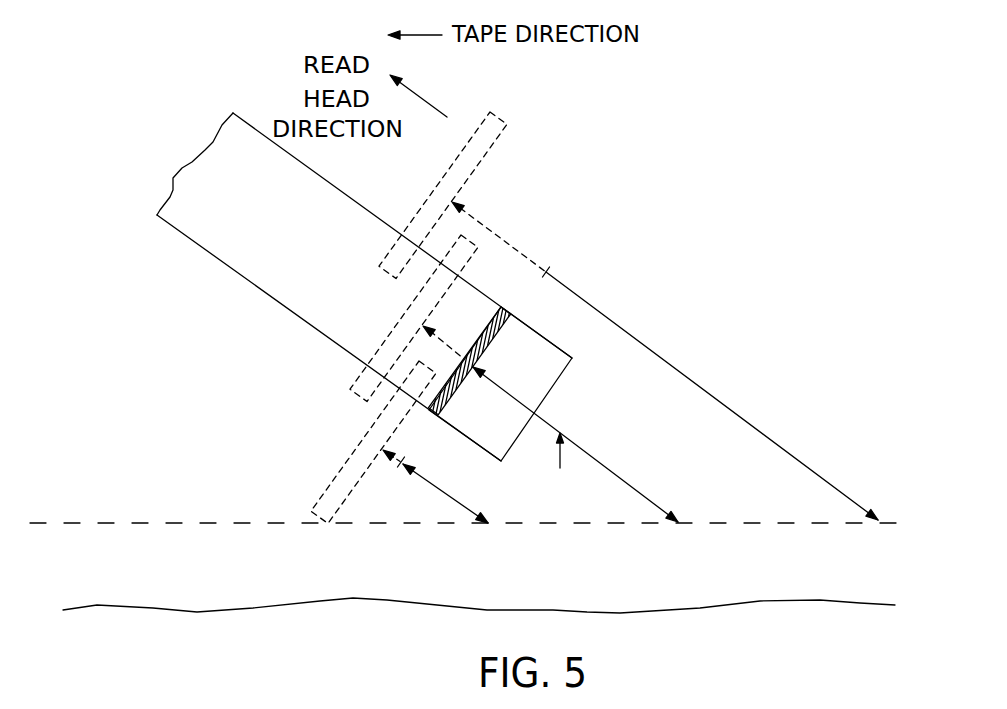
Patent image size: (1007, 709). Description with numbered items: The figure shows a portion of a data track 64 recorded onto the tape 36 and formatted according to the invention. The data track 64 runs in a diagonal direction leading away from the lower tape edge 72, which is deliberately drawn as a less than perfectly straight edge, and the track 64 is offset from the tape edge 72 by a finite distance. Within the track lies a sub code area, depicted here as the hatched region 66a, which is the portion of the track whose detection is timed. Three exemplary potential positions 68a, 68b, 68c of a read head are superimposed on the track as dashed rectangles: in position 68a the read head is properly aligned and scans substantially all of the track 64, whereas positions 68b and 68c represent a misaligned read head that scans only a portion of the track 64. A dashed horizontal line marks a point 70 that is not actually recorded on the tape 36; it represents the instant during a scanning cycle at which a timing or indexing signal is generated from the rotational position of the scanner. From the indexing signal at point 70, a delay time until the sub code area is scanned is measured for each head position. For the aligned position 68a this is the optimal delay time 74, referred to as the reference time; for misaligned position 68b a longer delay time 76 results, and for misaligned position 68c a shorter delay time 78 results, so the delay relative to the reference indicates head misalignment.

The tape 36 is at (742, 216).
The data track 64 is at (293, 251).
The servo stripe 66a is at (495, 336).
The position of properly aligned read head 68a is at (480, 252).
The position of misaligned read head 68b is at (497, 136).
The position of misaligned read head 68c is at (359, 480).
The point 70 is at (272, 525).
The tape edge 72 is at (350, 600).
The optimal delay time 74 is at (590, 455).
The longer delay time 76 is at (696, 383).
The shorter delay time 78 is at (437, 488).